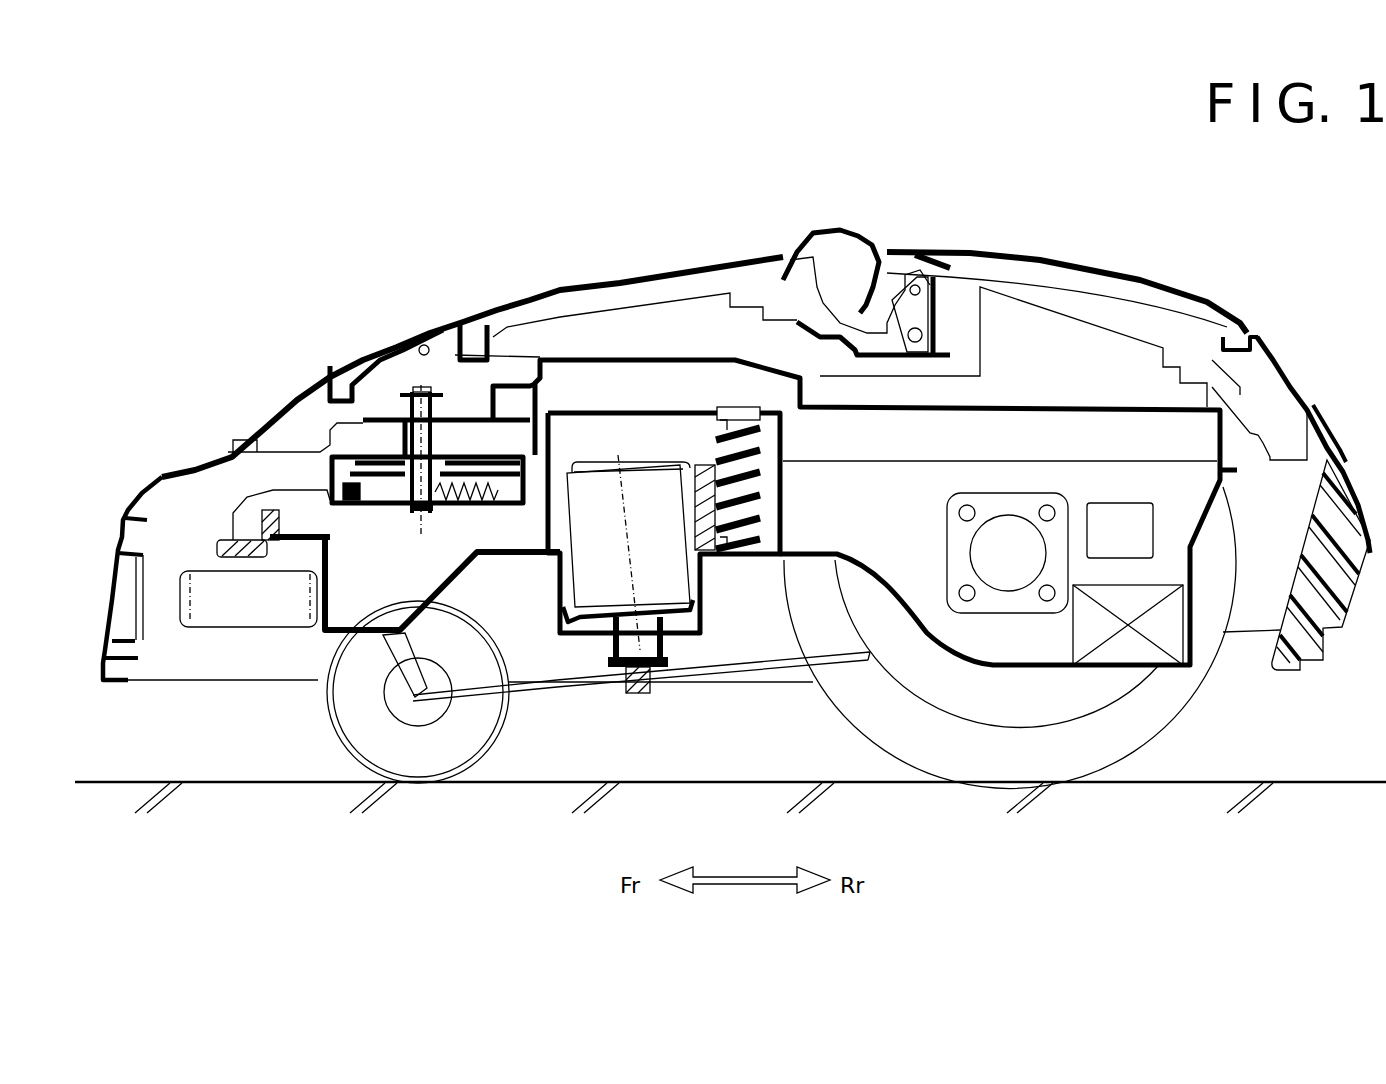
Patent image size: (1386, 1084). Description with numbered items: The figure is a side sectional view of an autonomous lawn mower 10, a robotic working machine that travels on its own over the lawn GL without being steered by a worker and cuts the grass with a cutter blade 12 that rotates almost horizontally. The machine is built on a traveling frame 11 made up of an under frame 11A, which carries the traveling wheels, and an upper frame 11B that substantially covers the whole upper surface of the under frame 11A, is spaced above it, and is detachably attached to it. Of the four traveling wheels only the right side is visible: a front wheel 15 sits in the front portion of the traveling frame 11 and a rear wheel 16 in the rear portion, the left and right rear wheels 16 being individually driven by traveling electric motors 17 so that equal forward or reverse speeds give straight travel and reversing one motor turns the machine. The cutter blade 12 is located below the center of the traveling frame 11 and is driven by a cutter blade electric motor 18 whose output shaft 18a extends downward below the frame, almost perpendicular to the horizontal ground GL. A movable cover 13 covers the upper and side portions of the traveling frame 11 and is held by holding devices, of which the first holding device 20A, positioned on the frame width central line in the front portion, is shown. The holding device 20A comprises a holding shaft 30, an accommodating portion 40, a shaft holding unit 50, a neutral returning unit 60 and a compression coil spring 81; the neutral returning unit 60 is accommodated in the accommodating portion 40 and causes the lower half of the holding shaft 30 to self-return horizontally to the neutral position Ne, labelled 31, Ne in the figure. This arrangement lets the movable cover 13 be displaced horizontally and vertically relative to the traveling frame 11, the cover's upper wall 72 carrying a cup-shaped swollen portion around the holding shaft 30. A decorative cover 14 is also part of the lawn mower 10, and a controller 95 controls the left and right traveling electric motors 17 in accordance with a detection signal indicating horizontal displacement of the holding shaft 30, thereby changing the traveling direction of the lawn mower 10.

The autonomous lawn mower 10 is at (216, 208).
The traveling frame 11 is at (370, 703).
The under frame 11A is at (330, 637).
The upper frame 11B is at (297, 512).
The cutter blade 12 is at (487, 705).
The movable cover 13 is at (155, 472).
The decorative cover 14 is at (420, 328).
The front wheels 15 is at (424, 760).
The rear wheels 16 is at (962, 752).
The traveling electric motors 17 is at (1010, 562).
The cutter blade electric motor 18 is at (600, 617).
The output shaft 18a is at (607, 650).
The first holding device 20A is at (328, 432).
The holding shaft 30 is at (390, 407).
The crankshaft (rotation speed Ne) 31 is at (420, 533).
The accommodating portion 40 is at (618, 455).
The shaft holding unit 50 is at (515, 478).
The neutral returning unit 60 is at (464, 508).
The upper wall 72 is at (345, 396).
The compression coil spring 81 is at (430, 405).
The controller 95 is at (1130, 503).
The lawn (ground) GL is at (86, 784).